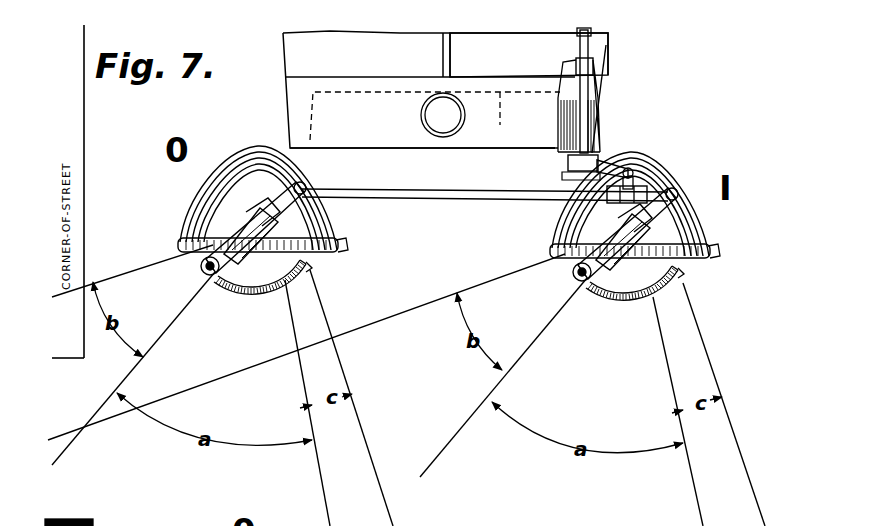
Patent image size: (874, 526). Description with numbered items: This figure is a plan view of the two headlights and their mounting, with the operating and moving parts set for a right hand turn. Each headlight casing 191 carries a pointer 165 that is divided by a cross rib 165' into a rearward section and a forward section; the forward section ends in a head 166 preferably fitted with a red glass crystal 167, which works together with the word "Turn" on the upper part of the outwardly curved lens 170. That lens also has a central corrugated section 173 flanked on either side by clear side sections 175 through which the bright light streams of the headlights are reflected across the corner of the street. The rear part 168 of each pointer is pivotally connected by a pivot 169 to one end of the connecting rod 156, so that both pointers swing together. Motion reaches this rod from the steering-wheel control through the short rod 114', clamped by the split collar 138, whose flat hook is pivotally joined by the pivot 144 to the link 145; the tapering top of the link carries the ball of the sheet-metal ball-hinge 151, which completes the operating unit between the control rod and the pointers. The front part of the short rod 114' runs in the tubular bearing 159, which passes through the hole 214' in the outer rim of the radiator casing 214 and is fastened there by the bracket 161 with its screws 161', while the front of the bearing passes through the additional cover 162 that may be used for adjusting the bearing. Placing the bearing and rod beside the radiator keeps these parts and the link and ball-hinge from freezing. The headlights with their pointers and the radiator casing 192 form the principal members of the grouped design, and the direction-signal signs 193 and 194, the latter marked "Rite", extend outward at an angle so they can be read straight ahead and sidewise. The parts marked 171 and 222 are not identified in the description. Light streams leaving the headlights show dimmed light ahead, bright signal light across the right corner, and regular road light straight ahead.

The short rod 114' is at (529, 55).
The split collar 138 is at (598, 60).
The pivot 144 is at (568, 160).
The link 145 is at (606, 162).
The ball-hinge 151 is at (566, 178).
The connecting rod 156 is at (398, 196).
The tubular bearing 159 is at (592, 106).
The bracket 161 is at (566, 53).
The screws 161' is at (603, 103).
The additional cover 162 is at (600, 150).
The pointers 165 is at (400, 239).
The cross ribs 165' is at (442, 205).
The heads 166 is at (180, 243).
The red glass crystals 167 is at (205, 278).
The rear part of pointer 168 is at (278, 216).
The pivots 169 is at (305, 184).
The outwardly curved lenses 170 is at (227, 288).
The turn indicator 171 is at (293, 283).
The central corrugated section 173 is at (258, 293).
The clear side sections 175 is at (200, 268).
The casing 191 is at (338, 252).
The radiator casing 192 is at (612, 84).
The signal sign 193 is at (500, 120).
The signal sign 194 is at (318, 52).
The radiator casing 214 is at (422, 153).
The hole 214' is at (516, 159).
The circular opening 222 is at (455, 122).